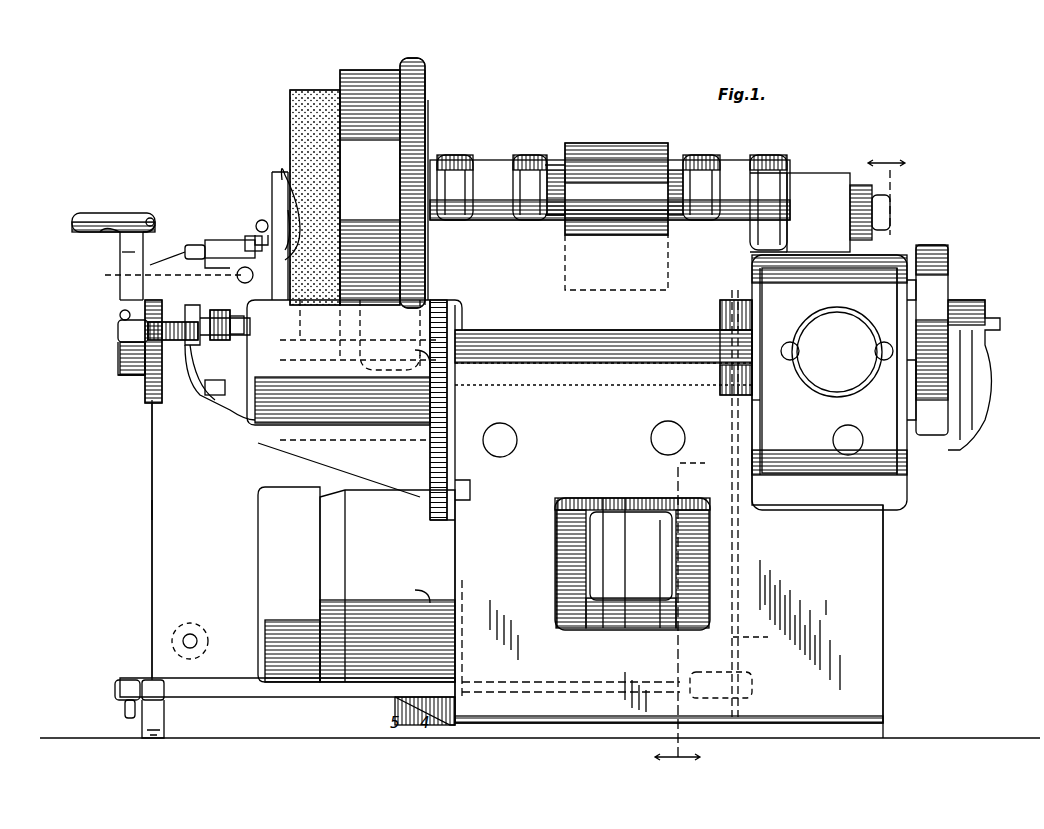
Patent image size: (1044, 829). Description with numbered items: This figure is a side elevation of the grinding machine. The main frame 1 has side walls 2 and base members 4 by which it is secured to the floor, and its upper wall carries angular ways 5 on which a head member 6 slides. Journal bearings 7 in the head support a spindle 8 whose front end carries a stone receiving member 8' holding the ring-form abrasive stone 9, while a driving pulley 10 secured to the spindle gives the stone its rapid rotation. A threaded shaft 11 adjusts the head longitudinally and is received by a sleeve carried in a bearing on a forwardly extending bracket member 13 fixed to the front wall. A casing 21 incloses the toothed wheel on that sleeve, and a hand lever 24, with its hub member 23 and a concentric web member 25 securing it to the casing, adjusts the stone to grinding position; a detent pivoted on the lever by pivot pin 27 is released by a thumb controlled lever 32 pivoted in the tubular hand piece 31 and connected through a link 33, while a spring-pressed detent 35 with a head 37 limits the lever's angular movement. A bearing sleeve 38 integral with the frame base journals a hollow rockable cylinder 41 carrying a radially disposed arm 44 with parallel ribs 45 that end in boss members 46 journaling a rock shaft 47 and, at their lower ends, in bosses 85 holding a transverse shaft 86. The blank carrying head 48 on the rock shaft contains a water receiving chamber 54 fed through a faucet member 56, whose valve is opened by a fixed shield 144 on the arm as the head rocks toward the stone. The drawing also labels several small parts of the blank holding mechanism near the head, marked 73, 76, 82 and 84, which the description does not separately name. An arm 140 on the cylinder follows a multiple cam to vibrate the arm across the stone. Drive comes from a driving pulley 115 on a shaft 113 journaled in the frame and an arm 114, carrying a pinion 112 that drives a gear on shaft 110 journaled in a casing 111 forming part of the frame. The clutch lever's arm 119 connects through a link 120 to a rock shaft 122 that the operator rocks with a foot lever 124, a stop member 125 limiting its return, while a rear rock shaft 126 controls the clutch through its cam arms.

The main frame 1 is at (890, 655).
The side walls 2 is at (888, 622).
The base members 4 is at (780, 460).
The angular ways 5 is at (468, 368).
The head member 6 is at (790, 244).
The journal bearings 7 is at (482, 185).
The spindle 8 is at (396, 187).
The stone receiving member 8' is at (430, 183).
The abrasive stone 9 is at (290, 106).
The driving pulley 10 is at (592, 143).
The shaft 11 is at (305, 373).
The bracket member 13 is at (356, 562).
The casing 21 is at (145, 408).
The hub member 23 is at (128, 362).
The hand lever 24 is at (120, 254).
The web member 25 is at (148, 386).
The pivot pin 27 is at (118, 314).
The tubular hand piece 31 is at (88, 216).
The thumb controlled lever 32 is at (116, 230).
The link 33 is at (198, 370).
The spring-pressed detent 35 is at (118, 300).
The head 37 is at (118, 328).
The bearing sleeve 38 is at (574, 500).
The hollow rockable cylinder 41 is at (675, 588).
The radially disposed arm 44 is at (150, 460).
The parallel ribs 45 is at (133, 509).
The boss members 46 is at (160, 277).
The rock shaft 47 is at (248, 240).
The blank carrying head 48 is at (250, 268).
The water receiving chamber 54 is at (126, 346).
The faucet member 56 is at (215, 310).
The pivot 73 is at (258, 222).
The guard plate 76 is at (290, 200).
The slide block 82 is at (225, 242).
The screw 84 is at (188, 250).
The bosses 85 is at (148, 641).
The transverse shaft 86 is at (152, 622).
The shaft 110 is at (680, 403).
The casing 111 is at (920, 500).
The pinion 112 is at (396, 451).
The shaft 113 is at (720, 325).
The arm 114 is at (990, 390).
The driving pulley 115 is at (940, 302).
The arm 119 is at (738, 300).
The link 120 is at (740, 540).
The rock shaft 122 is at (280, 697).
The foot lever 124 is at (125, 708).
The stop member 125 is at (812, 616).
The rock shaft 126 is at (860, 438).
The arm 140 is at (675, 500).
The shield 144 is at (276, 195).